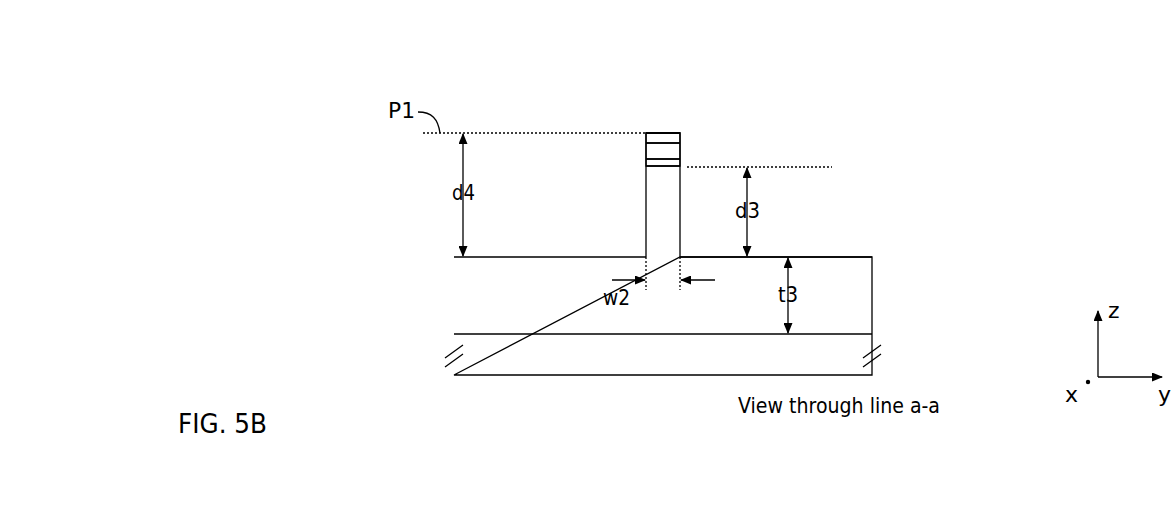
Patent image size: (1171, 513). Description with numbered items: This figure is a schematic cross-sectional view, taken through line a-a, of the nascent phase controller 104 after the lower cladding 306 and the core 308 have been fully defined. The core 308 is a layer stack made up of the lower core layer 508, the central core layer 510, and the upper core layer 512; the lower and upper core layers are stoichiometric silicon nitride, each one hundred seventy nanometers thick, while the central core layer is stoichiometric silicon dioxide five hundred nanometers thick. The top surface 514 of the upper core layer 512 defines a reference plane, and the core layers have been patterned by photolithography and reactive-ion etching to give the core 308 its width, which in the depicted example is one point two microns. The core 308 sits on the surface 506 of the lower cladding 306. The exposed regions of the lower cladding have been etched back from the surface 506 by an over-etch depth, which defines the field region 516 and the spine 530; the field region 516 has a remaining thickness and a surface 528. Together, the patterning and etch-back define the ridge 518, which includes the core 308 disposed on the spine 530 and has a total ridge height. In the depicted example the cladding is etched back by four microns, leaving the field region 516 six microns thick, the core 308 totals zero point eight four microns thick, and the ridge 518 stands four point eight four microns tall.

The phase controller 104 is at (319, 159).
The lower cladding 306 is at (424, 251).
The core 308 is at (694, 140).
The surface 506 is at (815, 167).
The lower core layer 508 is at (646, 162).
The central core layer 510 is at (646, 150).
The upper core layer 512 is at (646, 137).
The top surface 514 is at (668, 133).
The field region 516 is at (830, 300).
The ridge 518 is at (641, 93).
The surface 528 is at (846, 257).
The spine 530 is at (663, 197).